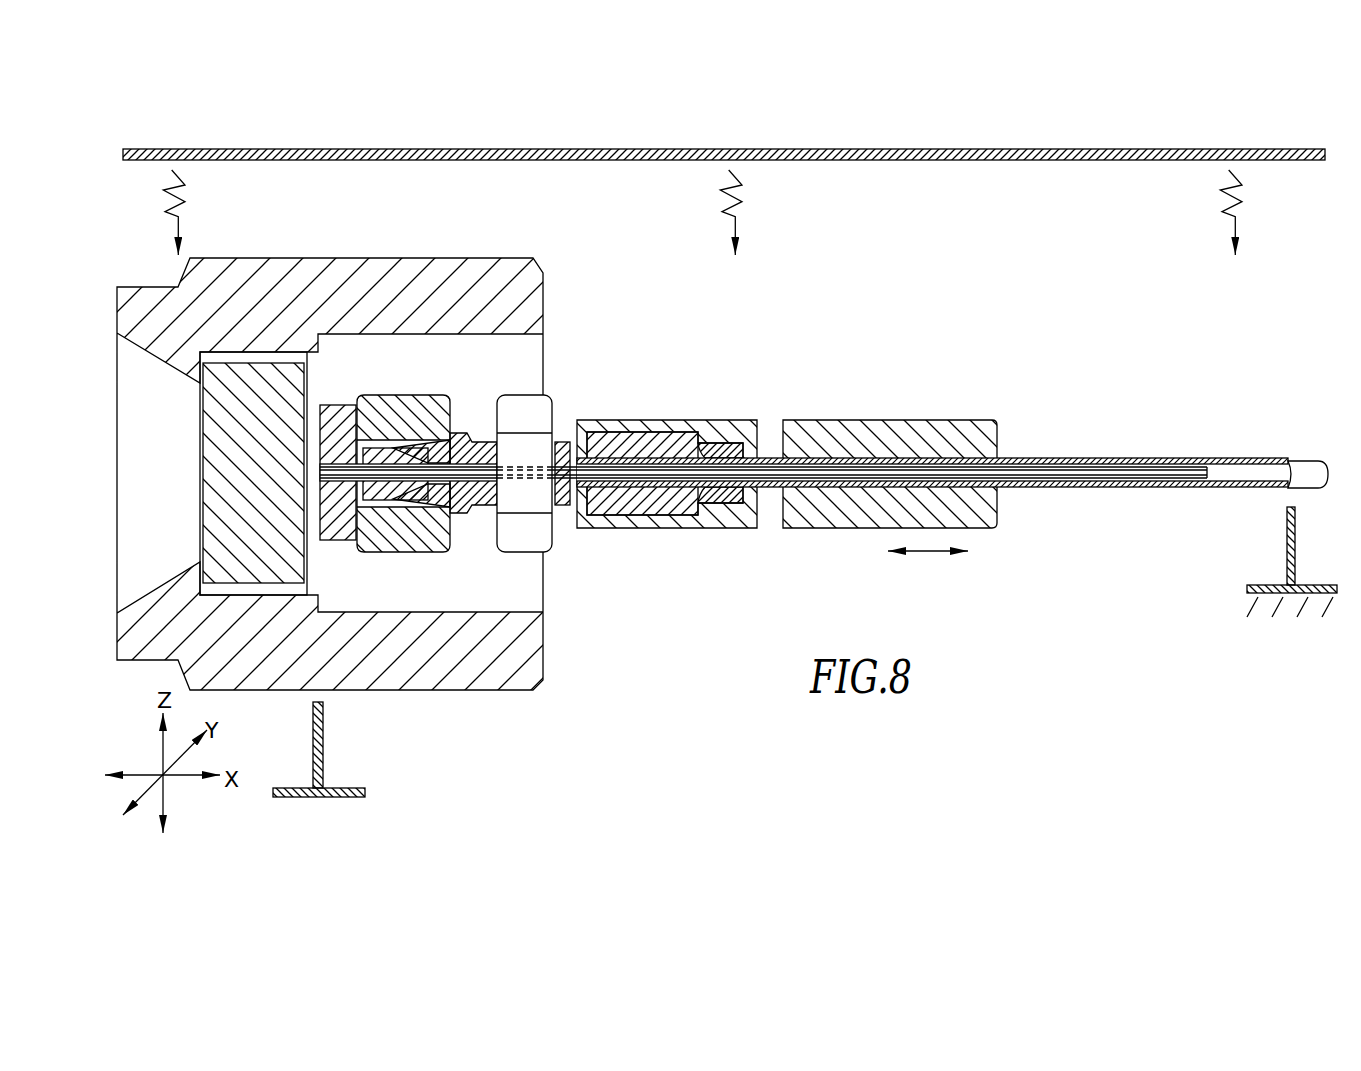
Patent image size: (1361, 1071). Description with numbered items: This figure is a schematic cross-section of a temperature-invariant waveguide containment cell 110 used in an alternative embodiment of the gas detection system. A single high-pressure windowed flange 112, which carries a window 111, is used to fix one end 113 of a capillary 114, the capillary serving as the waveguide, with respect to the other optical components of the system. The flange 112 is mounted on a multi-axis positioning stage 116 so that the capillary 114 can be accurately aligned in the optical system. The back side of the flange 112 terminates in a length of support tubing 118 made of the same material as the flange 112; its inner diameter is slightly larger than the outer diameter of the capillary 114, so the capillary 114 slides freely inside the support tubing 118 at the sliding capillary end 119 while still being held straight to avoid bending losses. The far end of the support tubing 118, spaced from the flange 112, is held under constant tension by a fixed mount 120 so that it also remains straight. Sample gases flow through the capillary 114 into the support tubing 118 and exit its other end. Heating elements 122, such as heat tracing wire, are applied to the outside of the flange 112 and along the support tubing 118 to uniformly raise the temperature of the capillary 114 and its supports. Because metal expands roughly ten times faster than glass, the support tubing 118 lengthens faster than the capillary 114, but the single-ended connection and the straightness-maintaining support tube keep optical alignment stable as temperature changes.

The temperature-invariant waveguide containment cell 110 is at (778, 127).
The window 111 is at (197, 467).
The high-pressure windowed flange 112 is at (157, 280).
The end of capillary 113 is at (338, 457).
The capillary 114 is at (835, 484).
The multi-axis positioning stage 116 is at (373, 793).
The support tubing 118 is at (1068, 458).
The sliding capillary end 119 is at (1212, 458).
The fixed mount 120 is at (1232, 593).
The heating elements 122 is at (528, 148).